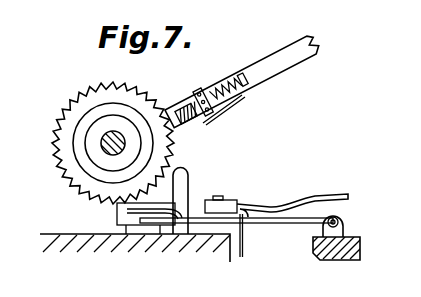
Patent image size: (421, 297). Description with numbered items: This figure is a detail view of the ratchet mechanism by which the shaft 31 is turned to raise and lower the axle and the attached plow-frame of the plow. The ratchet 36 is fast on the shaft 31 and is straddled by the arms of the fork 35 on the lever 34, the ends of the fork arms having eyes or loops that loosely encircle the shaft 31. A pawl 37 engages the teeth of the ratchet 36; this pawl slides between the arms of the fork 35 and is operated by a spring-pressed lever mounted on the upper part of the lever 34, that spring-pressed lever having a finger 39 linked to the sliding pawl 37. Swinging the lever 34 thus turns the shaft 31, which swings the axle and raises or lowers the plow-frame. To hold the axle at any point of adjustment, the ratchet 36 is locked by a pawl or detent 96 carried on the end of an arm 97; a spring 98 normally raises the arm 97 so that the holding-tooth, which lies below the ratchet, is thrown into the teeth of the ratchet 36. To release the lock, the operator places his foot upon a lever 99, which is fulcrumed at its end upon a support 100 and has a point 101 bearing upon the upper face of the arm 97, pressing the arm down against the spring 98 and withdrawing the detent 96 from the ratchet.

The shaft 31 is at (110, 142).
The lever 34 is at (242, 82).
The fork 35 is at (205, 92).
The ratchet 36 is at (91, 92).
The pawl 37 is at (183, 107).
The finger 39 is at (224, 114).
The pawl or detent 96 is at (117, 219).
The arm 97 is at (281, 225).
The spring 98 is at (180, 215).
The lever 99 is at (312, 196).
The support 100 is at (220, 200).
The point 101 is at (240, 258).